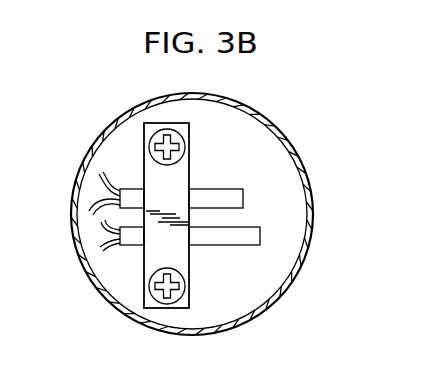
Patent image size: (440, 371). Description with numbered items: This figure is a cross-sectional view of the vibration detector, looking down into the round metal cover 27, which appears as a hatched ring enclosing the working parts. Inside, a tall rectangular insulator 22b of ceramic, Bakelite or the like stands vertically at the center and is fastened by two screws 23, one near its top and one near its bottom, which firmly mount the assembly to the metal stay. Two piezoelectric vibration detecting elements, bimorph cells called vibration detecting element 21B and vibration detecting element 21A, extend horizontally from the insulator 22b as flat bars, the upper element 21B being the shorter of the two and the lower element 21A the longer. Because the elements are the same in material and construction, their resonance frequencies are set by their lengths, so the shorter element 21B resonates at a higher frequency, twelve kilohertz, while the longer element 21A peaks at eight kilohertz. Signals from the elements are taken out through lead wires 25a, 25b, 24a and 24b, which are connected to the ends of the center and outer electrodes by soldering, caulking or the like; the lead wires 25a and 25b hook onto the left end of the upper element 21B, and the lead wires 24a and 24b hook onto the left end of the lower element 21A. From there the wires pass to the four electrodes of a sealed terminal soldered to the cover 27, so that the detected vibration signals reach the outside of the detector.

The metal cover 27 is at (303, 180).
The vibration detecting element 21B is at (232, 190).
The vibration detecting element 21A is at (243, 246).
The insulator 22b is at (186, 270).
The screw 23 is at (150, 286).
The lead wire 25a is at (118, 166).
The lead wire 25b is at (100, 193).
The lead wire 24a is at (100, 226).
The lead wire 24b is at (100, 248).